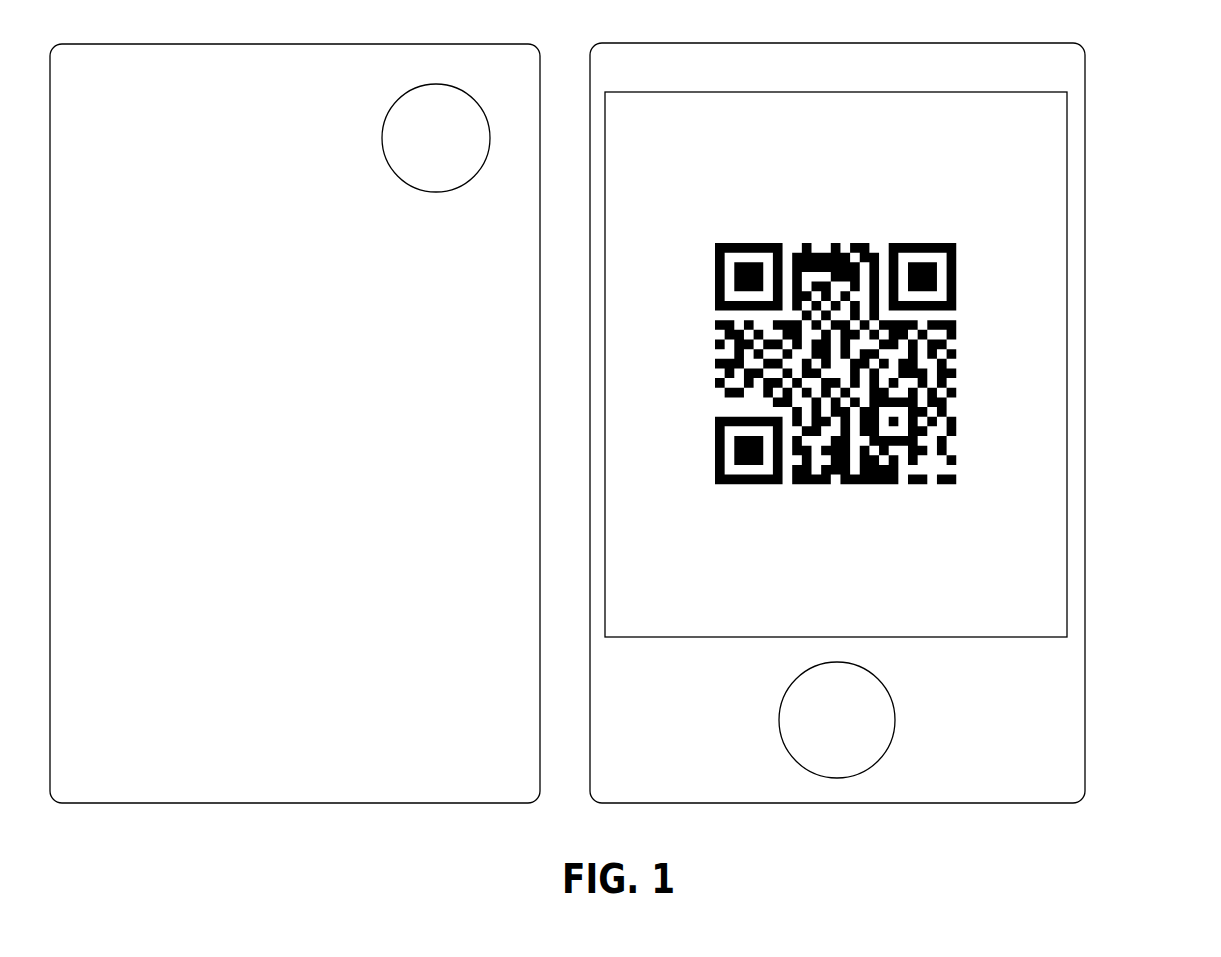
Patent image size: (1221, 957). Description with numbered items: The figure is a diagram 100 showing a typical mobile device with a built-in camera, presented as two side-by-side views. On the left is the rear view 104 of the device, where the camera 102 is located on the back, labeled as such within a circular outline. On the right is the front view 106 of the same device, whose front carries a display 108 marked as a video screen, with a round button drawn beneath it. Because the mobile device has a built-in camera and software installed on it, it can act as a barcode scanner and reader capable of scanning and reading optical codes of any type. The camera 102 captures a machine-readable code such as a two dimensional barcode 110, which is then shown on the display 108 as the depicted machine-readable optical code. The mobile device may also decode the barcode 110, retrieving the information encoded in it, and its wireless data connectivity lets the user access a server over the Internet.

The diagram 100 is at (1196, 71).
The camera 102 is at (381, 140).
The rear view 104 is at (297, 803).
The front view 106 is at (900, 803).
The display 108 is at (680, 638).
The two dimensional barcode 110 is at (937, 232).